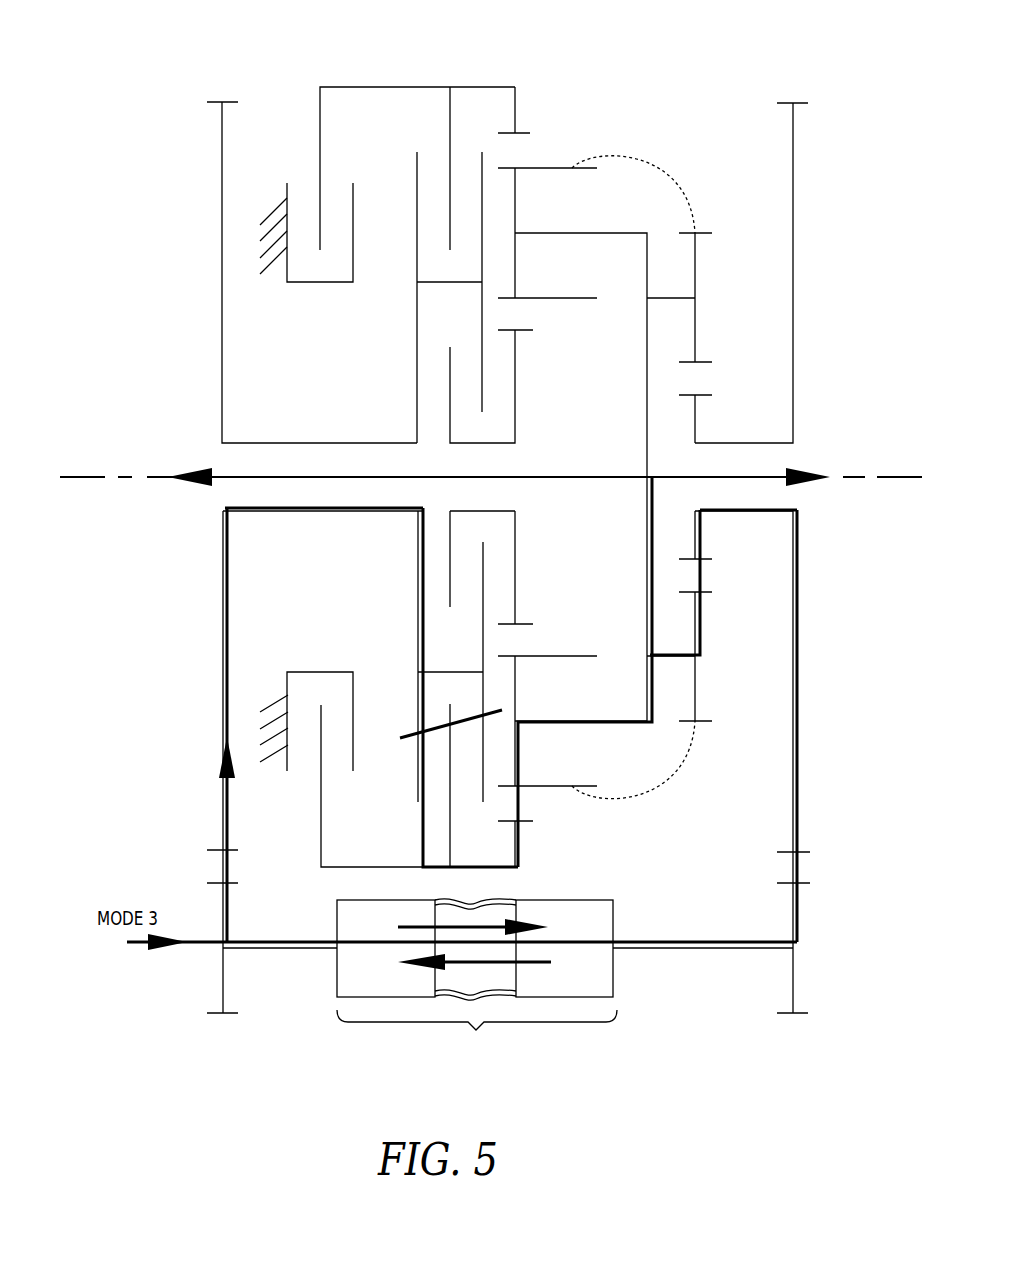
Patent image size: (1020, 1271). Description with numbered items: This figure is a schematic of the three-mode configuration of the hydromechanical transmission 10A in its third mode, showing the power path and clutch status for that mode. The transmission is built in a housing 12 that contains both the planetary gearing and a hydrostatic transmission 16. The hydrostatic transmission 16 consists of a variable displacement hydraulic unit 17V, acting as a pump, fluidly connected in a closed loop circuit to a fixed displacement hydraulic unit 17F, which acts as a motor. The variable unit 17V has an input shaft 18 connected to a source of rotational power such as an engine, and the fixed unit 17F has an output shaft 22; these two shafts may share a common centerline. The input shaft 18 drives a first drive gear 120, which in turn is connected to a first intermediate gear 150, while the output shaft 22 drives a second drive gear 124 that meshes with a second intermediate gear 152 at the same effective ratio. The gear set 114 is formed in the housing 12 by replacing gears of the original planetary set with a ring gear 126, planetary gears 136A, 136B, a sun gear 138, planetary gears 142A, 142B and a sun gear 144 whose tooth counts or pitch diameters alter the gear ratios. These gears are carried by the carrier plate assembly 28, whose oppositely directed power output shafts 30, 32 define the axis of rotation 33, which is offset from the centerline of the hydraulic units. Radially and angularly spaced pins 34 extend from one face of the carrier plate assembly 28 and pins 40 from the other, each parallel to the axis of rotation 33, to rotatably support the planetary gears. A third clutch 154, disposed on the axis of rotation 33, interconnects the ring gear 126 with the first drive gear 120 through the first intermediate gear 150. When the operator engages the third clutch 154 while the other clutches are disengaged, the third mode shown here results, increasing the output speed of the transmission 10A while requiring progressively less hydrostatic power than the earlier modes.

The hydromechanical transmission 10A is at (151, 218).
The housing 12 is at (275, 695).
The hydrostatic transmission 16 is at (477, 982).
The variable displacement hydraulic unit 17V is at (386, 948).
The fixed displacement hydraulic unit 17F is at (564, 948).
The input shaft 18 is at (312, 948).
The output shaft 22 is at (683, 948).
The carrier plate assembly 28 is at (618, 405).
The power output shaft 30 is at (612, 477).
The power output shaft 32 is at (748, 477).
The axis of rotation 33 is at (150, 477).
The pins 34 is at (670, 298).
The pins 40 is at (585, 233).
The gear set 114 is at (700, 133).
The first drive gear 120 is at (223, 982).
The second drive gear 124 is at (793, 988).
The ring gear 126 is at (450, 87).
The planetary gear 136A is at (708, 233).
The planetary gear 136B is at (698, 725).
The sun gear 138 is at (697, 420).
The planetary gear 142A is at (555, 168).
The planetary gear 142B is at (545, 787).
The sun gear 144 is at (522, 332).
The first intermediate gear 150 is at (222, 312).
The second intermediate gear 152 is at (793, 300).
The third clutch 154 is at (442, 728).